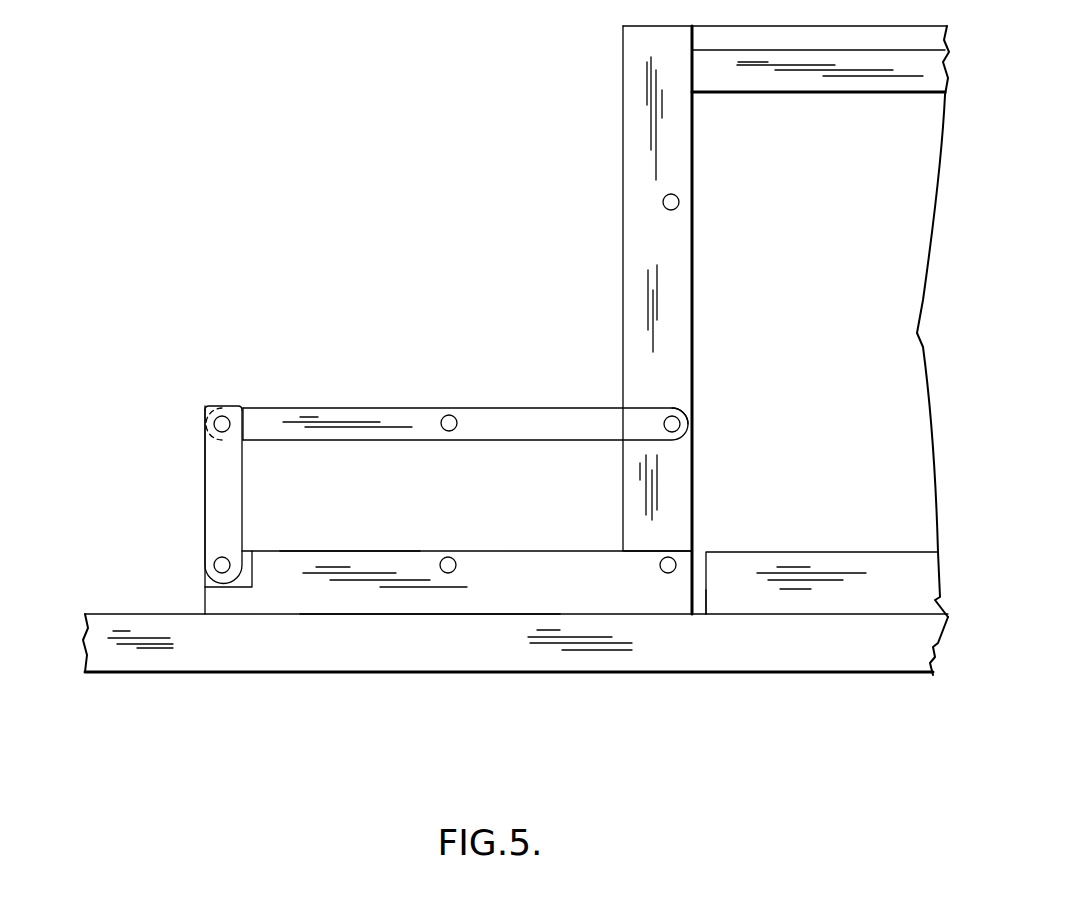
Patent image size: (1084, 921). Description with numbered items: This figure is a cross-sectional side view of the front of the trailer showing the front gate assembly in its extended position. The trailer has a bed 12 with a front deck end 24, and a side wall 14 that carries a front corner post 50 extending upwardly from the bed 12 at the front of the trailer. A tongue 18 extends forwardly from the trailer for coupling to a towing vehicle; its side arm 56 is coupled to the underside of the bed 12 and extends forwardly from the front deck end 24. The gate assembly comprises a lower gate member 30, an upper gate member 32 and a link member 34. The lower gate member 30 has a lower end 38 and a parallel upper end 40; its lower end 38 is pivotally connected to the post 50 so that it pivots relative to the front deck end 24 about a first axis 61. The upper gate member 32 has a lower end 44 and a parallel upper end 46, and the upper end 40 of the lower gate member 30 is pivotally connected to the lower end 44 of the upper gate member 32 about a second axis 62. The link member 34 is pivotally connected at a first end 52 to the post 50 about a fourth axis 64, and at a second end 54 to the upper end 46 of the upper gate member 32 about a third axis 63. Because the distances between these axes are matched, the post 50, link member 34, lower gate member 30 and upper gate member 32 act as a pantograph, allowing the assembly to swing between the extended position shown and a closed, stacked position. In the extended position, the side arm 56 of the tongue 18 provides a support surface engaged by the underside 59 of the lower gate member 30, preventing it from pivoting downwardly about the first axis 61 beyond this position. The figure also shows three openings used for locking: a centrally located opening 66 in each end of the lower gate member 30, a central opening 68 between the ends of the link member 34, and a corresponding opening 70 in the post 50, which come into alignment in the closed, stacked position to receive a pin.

The bed 12 is at (867, 600).
The side wall 14 is at (826, 248).
The tongue 18 is at (140, 673).
The front deck end 24 is at (707, 590).
The lower gate member 30 is at (505, 587).
The upper gate member 32 is at (227, 487).
The link member 34 is at (348, 403).
The lower end 38 is at (678, 590).
The upper end 40 is at (207, 598).
The lower end 44 is at (207, 585).
The upper end 46 is at (217, 405).
The front corner post 50 is at (650, 233).
The first end 52 is at (680, 402).
The second end 54 is at (248, 410).
The side arm 56 is at (437, 643).
The underside 59 is at (347, 600).
The first axis 61 is at (670, 557).
The second axis 62 is at (215, 563).
The third axis 63 is at (208, 423).
The fourth axis 64 is at (688, 437).
The opening 66 is at (448, 557).
The central opening 68 is at (449, 415).
The opening 70 is at (679, 197).